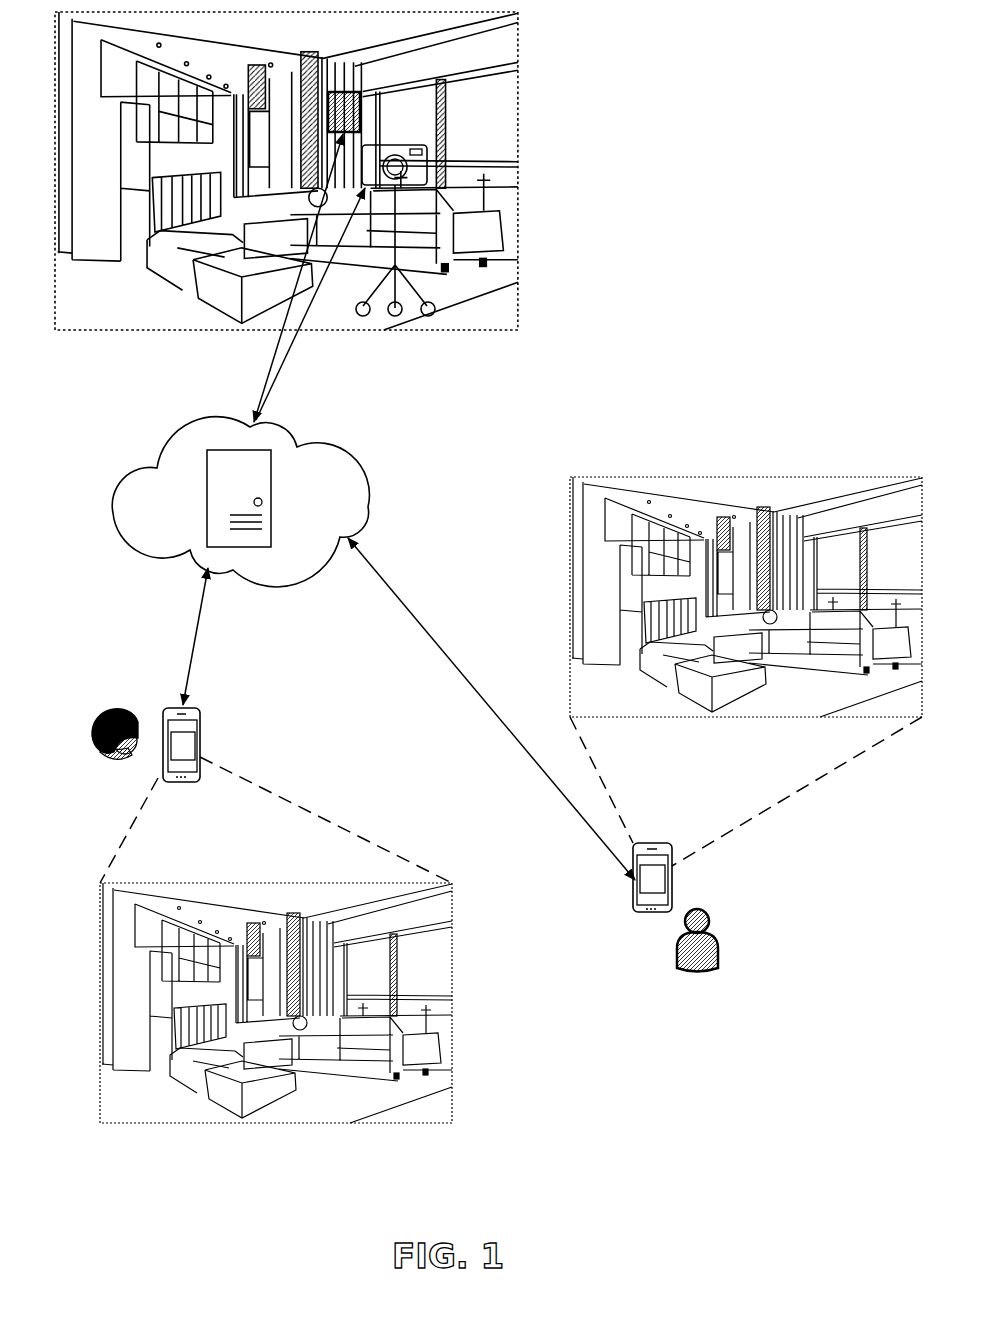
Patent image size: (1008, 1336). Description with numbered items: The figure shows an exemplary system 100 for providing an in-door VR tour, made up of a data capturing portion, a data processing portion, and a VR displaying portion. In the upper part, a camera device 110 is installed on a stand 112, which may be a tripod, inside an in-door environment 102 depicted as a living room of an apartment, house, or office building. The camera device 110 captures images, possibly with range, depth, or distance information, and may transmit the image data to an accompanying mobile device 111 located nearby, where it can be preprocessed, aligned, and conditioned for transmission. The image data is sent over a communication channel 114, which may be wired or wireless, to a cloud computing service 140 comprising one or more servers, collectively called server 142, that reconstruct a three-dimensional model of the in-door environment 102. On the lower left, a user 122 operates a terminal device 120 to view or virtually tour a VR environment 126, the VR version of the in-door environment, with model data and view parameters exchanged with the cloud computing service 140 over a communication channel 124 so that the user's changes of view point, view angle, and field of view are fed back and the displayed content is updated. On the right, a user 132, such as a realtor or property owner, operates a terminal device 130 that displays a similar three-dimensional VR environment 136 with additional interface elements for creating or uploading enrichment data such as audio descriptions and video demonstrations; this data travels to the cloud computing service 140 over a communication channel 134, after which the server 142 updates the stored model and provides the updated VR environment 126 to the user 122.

The system 100 is at (850, 114).
The in-door environment 102 is at (518, 12).
The camera device 110 is at (427, 180).
The mobile device 111 is at (360, 118).
The stand 112 is at (395, 265).
The communication channel 114 is at (280, 372).
The terminal device 120 is at (200, 714).
The user 122 is at (92, 732).
The communication channel 124 is at (203, 617).
The VR environment 126 is at (182, 745).
The terminal device 130 is at (633, 912).
The user 132 is at (722, 955).
The communication channel 134 is at (422, 580).
The 3D VR environment 136 is at (700, 477).
The cloud computing service 140 is at (367, 495).
The server 142 is at (270, 497).